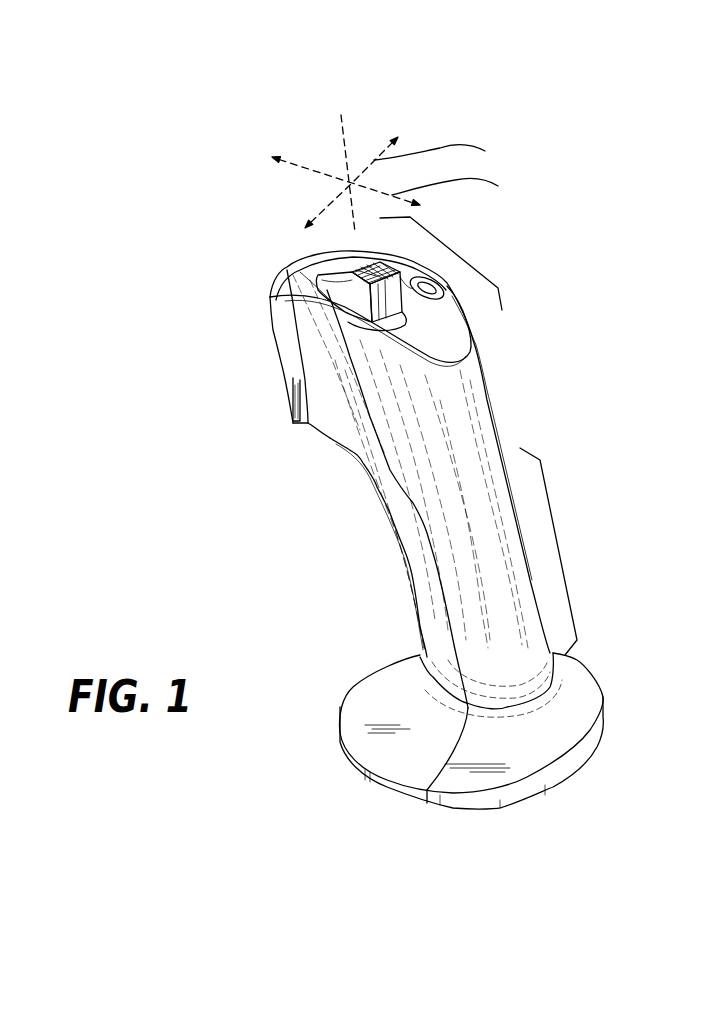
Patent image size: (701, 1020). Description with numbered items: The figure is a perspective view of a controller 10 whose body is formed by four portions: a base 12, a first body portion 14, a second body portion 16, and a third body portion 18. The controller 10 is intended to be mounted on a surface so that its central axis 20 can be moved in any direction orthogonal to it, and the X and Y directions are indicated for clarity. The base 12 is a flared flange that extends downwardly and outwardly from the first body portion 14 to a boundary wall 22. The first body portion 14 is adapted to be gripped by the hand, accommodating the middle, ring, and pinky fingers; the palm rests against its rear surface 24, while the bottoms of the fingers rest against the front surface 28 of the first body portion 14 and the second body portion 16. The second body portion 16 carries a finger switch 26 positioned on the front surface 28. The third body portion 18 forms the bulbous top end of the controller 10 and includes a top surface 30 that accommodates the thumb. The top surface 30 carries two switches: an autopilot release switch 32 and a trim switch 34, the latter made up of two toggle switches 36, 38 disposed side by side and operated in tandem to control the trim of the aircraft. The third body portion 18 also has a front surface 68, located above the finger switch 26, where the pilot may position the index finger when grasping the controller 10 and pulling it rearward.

The controller 10 is at (553, 357).
The base 12 is at (583, 688).
The first body portion 14 is at (553, 516).
The second body portion 16 is at (272, 358).
The third body portion 18 is at (452, 244).
The central axis 20 is at (346, 133).
The boundary wall 22 is at (567, 755).
The rear surface 24 is at (480, 436).
The finger switch 26 is at (297, 424).
The front surface 28 is at (352, 457).
The top surface 30 is at (452, 338).
The autopilot release switch 32 is at (436, 286).
The trim switch 34 is at (328, 301).
The toggle switch 36 is at (330, 281).
The toggle switch 38 is at (365, 259).
The front surface 68 is at (292, 330).